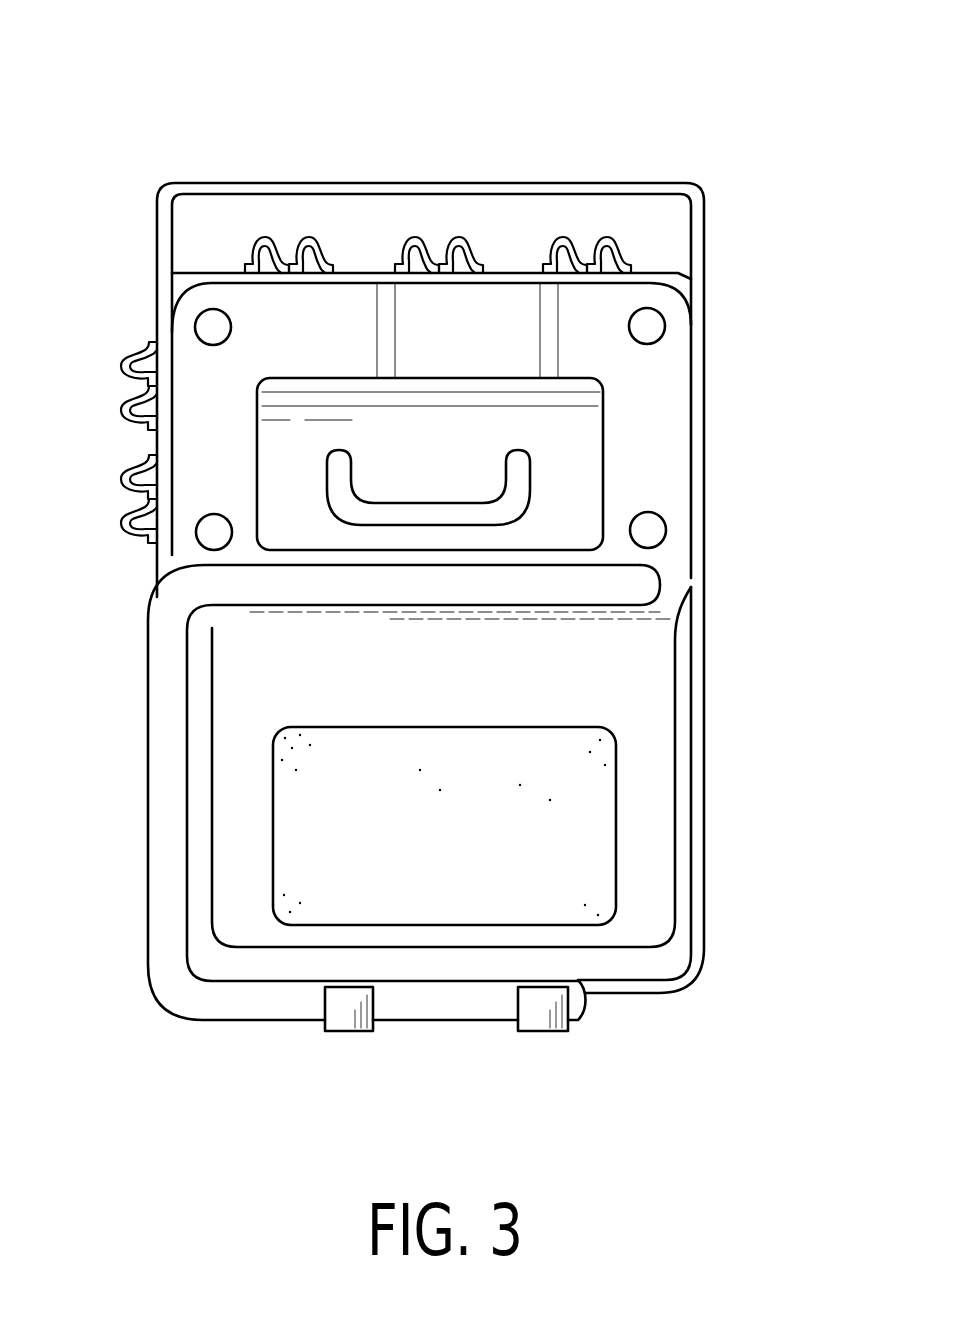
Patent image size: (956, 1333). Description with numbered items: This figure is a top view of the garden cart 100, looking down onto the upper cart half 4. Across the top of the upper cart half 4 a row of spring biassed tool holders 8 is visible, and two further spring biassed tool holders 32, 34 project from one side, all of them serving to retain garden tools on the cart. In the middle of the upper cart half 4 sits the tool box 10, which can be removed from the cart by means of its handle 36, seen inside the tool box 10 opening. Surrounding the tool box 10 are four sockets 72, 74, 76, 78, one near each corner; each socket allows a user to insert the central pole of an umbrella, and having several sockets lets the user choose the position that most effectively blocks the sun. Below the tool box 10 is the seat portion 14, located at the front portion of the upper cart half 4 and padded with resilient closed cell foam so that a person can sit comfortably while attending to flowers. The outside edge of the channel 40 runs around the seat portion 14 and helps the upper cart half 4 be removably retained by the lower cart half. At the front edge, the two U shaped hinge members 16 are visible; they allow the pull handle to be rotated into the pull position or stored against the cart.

The garden cart 100 is at (757, 45).
The upper cart half 4 is at (693, 745).
The spring biassed tool holder 8 is at (574, 225).
The tool box 10 is at (592, 448).
The seat portion 14 is at (296, 832).
The U shaped hinge member 16 is at (383, 1080).
The spring biassed tool holder 32 is at (130, 378).
The spring biassed tool holder 34 is at (130, 486).
The handle 36 is at (530, 478).
The channel 40 is at (706, 655).
The socket 72 is at (665, 533).
The socket 74 is at (197, 540).
The socket 76 is at (196, 324).
The socket 78 is at (665, 326).